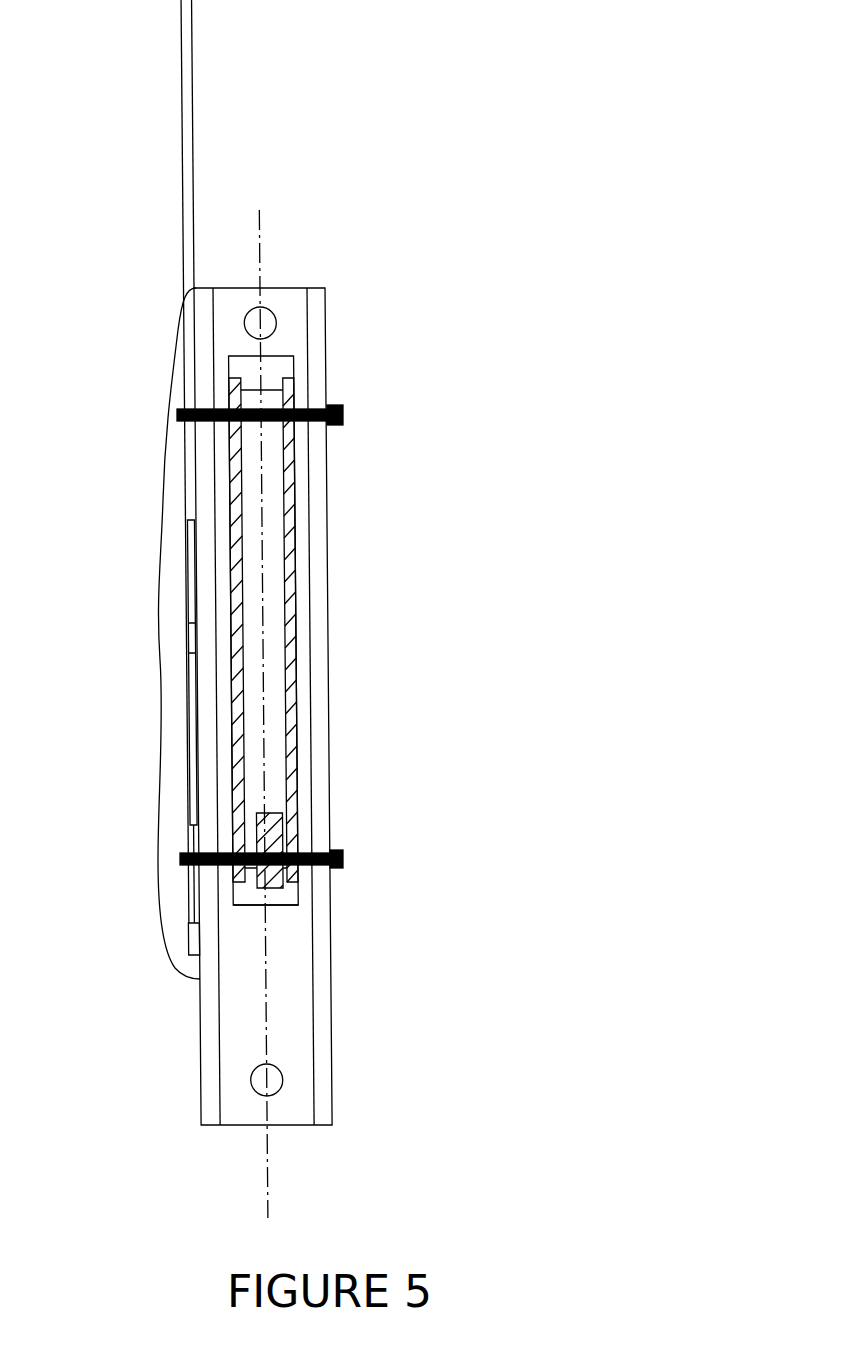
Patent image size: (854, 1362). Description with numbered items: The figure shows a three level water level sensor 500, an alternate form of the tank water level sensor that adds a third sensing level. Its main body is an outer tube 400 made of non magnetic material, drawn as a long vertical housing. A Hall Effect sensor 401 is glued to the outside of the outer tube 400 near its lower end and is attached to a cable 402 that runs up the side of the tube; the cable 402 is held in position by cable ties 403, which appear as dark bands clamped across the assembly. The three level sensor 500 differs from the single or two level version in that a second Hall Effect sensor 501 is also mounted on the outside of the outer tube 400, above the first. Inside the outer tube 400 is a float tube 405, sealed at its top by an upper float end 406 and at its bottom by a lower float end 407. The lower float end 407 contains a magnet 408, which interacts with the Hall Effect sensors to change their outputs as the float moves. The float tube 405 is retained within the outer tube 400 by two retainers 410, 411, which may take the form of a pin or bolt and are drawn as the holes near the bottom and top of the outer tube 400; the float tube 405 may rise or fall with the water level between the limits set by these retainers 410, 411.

The outer tube 400 is at (210, 1058).
The Hall Effect sensor 401 is at (190, 935).
The cable 402 is at (187, 160).
The cable ties 403 is at (343, 407).
The float tube 405 is at (297, 605).
The upper float end 406 is at (290, 360).
The lower float end 407 is at (283, 902).
The magnet 408 is at (280, 838).
The retainer 410 is at (262, 1090).
The retainer 411 is at (262, 330).
The three level water level sensor 500 is at (402, 648).
The second Hall Effect sensor 501 is at (190, 632).